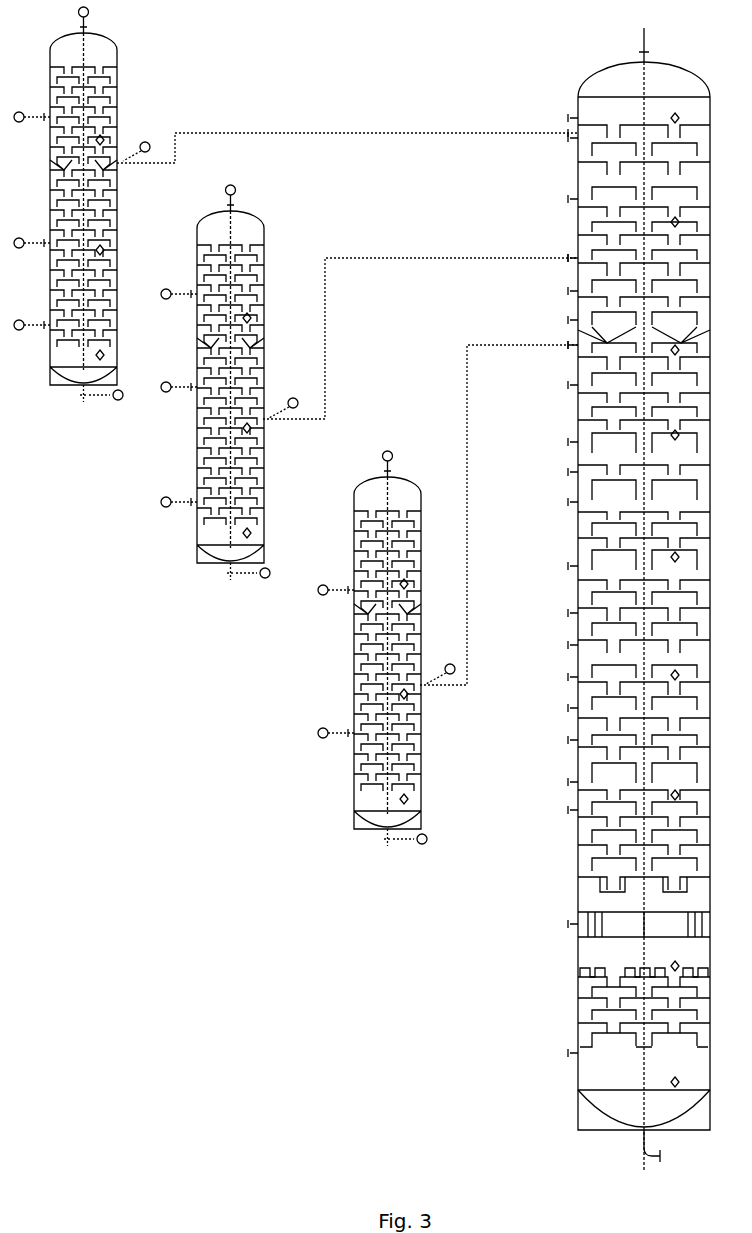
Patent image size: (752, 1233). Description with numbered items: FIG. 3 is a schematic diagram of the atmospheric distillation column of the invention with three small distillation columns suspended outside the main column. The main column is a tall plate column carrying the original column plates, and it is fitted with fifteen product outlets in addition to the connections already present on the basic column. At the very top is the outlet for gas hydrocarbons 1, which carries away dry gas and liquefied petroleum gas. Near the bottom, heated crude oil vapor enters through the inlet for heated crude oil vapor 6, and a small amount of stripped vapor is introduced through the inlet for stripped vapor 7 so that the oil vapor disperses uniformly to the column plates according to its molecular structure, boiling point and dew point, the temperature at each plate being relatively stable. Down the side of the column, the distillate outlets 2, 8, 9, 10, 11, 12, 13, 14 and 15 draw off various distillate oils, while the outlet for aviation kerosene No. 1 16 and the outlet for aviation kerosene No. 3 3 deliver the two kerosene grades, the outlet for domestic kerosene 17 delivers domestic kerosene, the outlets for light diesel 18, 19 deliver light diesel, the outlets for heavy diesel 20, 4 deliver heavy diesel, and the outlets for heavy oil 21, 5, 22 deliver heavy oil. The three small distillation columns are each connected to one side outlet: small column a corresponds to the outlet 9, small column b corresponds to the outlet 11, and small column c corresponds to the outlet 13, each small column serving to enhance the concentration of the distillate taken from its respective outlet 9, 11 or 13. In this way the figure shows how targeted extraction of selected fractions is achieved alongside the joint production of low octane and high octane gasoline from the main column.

The outlet for gas hydrocarbons 1 is at (644, 35).
The distillate oil outlet 2 is at (570, 291).
The outlet for aviation kerosene No. 3 is at (570, 502).
The outlet for heavy diesel 4 is at (570, 708).
The outlet for heavy oil 5 is at (570, 782).
The inlet for heated crude oil vapor 6 is at (570, 924).
The inlet for stripped vapor 7 is at (570, 1053).
The distillate oil outlet 8 is at (570, 118).
The distillate oil outlet 9 is at (567, 139).
The distillate oil outlet 10 is at (570, 199).
The distillate oil outlet 11 is at (567, 257).
The distillate oil outlet 12 is at (570, 320).
The product outlet 13 is at (567, 346).
The product outlet 14 is at (570, 385).
The product outlet 15 is at (570, 442).
The outlet for aviation kerosene No. 1 16 is at (570, 472).
The outlet for domestic kerosene 17 is at (570, 566).
The outlet for light diesel 18 is at (570, 613).
The outlet for light diesel 19 is at (570, 645).
The outlet for heavy diesel 20 is at (570, 677).
The outlet for heavy oil 21 is at (570, 740).
The outlet for heavy oil 22 is at (570, 810).